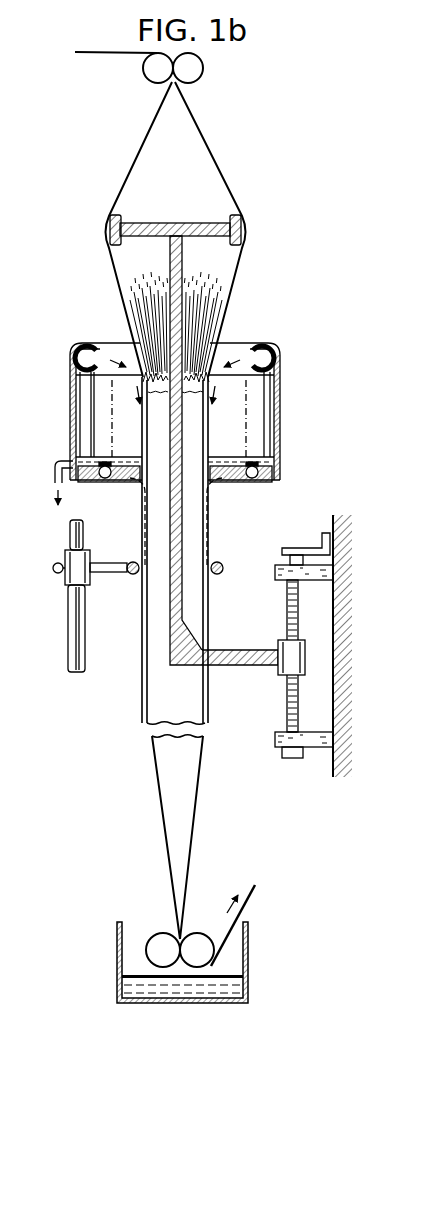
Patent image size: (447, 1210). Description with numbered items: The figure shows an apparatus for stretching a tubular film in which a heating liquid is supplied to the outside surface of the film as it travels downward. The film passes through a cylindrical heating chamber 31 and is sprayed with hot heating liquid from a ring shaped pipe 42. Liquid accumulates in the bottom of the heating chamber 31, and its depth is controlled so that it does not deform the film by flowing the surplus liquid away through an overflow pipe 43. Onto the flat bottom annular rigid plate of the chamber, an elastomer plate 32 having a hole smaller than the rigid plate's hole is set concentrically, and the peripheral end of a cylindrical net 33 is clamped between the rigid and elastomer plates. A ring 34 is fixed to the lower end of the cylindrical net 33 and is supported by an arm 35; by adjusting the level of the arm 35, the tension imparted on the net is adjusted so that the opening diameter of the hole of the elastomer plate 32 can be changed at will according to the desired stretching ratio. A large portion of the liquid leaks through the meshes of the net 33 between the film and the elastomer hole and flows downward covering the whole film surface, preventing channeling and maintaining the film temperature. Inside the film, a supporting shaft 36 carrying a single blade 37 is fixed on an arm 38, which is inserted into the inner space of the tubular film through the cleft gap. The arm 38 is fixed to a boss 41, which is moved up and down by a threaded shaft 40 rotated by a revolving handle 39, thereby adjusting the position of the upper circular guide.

The cylindrical heating chamber 31 is at (295, 405).
The elastomer plate 32 is at (140, 482).
The cylindrical net 33 is at (208, 500).
The ring 34 is at (222, 568).
The arm 35 is at (65, 583).
The supporting shaft 36 is at (169, 642).
The single blade 37 is at (183, 550).
The arm 38 is at (243, 666).
The revolving handle 39 is at (322, 540).
The threaded shaft 40 is at (287, 718).
The boss 41 is at (278, 672).
The ring shaped pipe 42 is at (94, 345).
The overflow pipe 43 is at (56, 465).